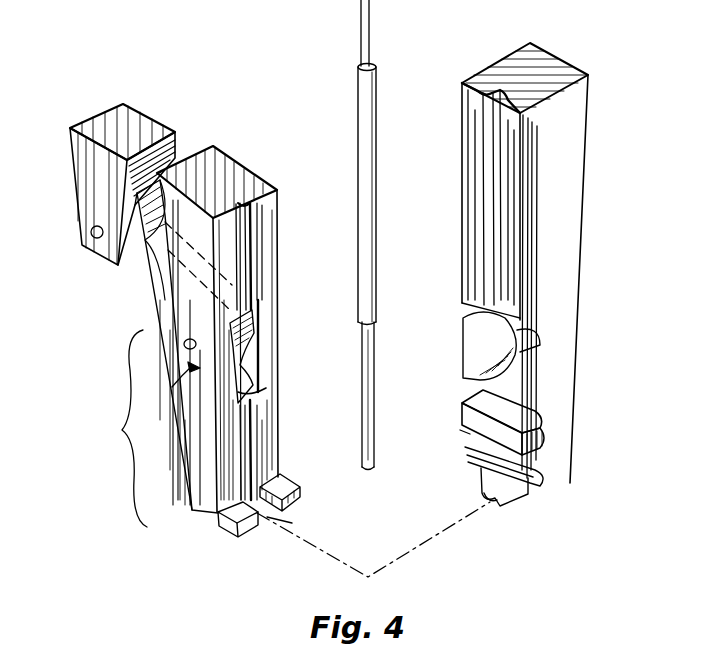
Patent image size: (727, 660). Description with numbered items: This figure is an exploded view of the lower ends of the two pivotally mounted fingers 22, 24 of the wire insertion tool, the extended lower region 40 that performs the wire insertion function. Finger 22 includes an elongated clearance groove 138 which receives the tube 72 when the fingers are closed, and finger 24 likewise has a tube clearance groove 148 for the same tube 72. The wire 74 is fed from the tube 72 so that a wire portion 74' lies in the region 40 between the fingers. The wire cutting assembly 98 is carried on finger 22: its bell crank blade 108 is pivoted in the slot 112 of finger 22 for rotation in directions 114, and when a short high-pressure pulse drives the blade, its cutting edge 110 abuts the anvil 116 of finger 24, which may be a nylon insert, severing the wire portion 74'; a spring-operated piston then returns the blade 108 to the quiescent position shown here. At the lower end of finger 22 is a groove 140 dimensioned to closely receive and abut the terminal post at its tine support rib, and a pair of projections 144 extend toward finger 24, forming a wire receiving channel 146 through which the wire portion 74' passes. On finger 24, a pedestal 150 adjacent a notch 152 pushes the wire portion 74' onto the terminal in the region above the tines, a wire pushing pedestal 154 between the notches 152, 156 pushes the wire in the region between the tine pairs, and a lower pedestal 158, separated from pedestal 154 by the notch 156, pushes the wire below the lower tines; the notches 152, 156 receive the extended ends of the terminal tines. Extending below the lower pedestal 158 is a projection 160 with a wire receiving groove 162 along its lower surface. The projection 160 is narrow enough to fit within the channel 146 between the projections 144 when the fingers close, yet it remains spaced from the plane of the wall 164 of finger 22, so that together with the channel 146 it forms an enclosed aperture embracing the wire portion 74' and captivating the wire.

The finger 22 is at (272, 300).
The finger 24 is at (585, 106).
The region 40 is at (122, 430).
The tube 72 is at (373, 100).
The wire 74 is at (382, 33).
The wire portion 74' is at (384, 396).
The wire cutting assembly 98 is at (122, 290).
The bell crank blade 108 is at (152, 305).
The cutting edge 110 is at (266, 390).
The slot 112 is at (255, 360).
The directions 114 is at (172, 387).
The anvil 116 is at (490, 340).
The elongated clearance groove 138 is at (247, 257).
The groove 140 is at (248, 458).
The projections 144 is at (300, 493).
The wire receiving channel 146 is at (285, 516).
The tube clearance groove 148 is at (487, 143).
The pedestal 150 is at (535, 387).
The notch 152 is at (465, 390).
The wire pushing pedestal 154 is at (535, 443).
The notch 156 is at (460, 435).
The lower pedestal 158 is at (473, 457).
The projection 160 is at (516, 512).
The wire receiving groove 162 is at (488, 502).
The wall 164 is at (272, 220).